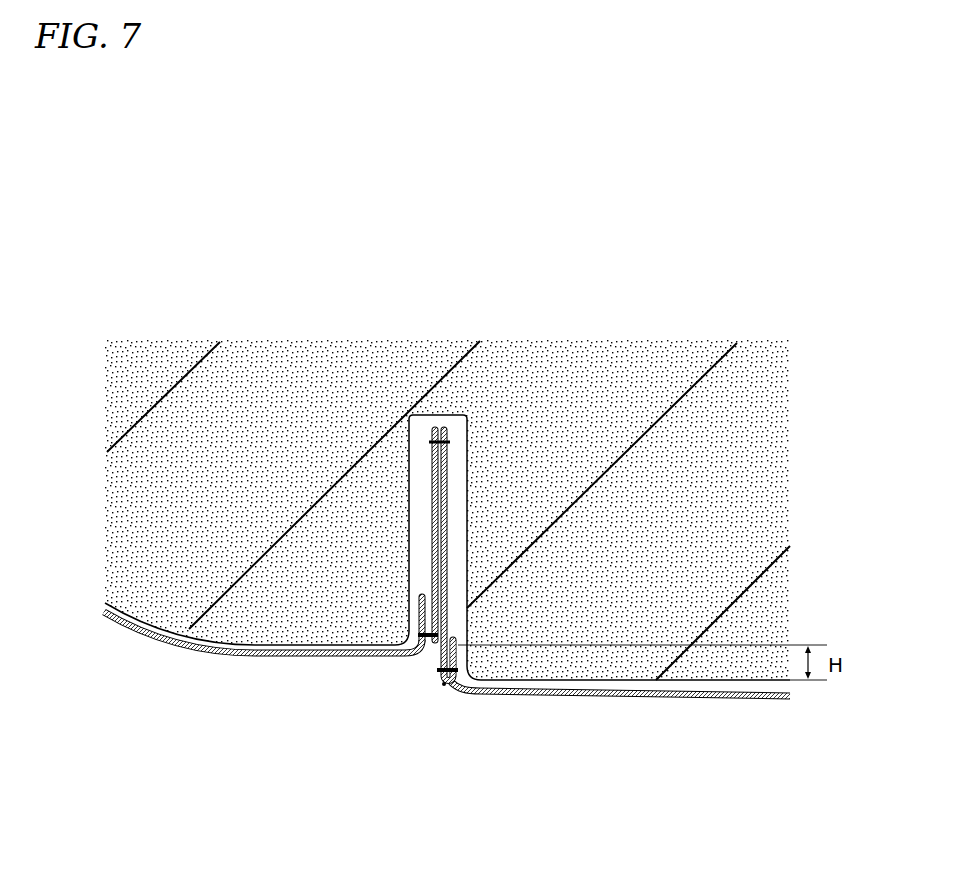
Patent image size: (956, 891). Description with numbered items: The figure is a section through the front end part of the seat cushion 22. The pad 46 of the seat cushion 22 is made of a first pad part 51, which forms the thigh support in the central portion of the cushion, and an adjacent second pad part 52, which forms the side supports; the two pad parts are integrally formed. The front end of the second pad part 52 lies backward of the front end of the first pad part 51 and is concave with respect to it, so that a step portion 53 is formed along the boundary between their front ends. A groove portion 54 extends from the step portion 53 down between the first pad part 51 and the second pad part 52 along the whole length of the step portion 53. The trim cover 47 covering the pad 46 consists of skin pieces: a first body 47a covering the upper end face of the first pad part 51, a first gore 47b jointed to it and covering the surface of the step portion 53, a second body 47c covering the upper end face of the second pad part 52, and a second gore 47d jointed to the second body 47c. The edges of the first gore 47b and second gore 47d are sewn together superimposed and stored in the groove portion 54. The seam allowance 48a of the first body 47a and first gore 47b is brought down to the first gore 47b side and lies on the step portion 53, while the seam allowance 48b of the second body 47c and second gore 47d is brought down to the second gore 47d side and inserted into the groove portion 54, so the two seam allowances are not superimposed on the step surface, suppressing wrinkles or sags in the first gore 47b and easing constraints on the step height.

The seat cushion 22 is at (121, 193).
The pad 46 is at (505, 223).
The trim cover 47 is at (605, 795).
The first body 47a is at (508, 697).
The first gore 47b is at (445, 690).
The second body 47c is at (373, 655).
The second gore 47d is at (422, 657).
The seam allowance 48a is at (457, 652).
The seam allowance 48b is at (418, 612).
The first pad part 51 is at (517, 355).
The second pad part 52 is at (377, 355).
The step portion 53 is at (441, 688).
The groove portion 54 is at (467, 438).